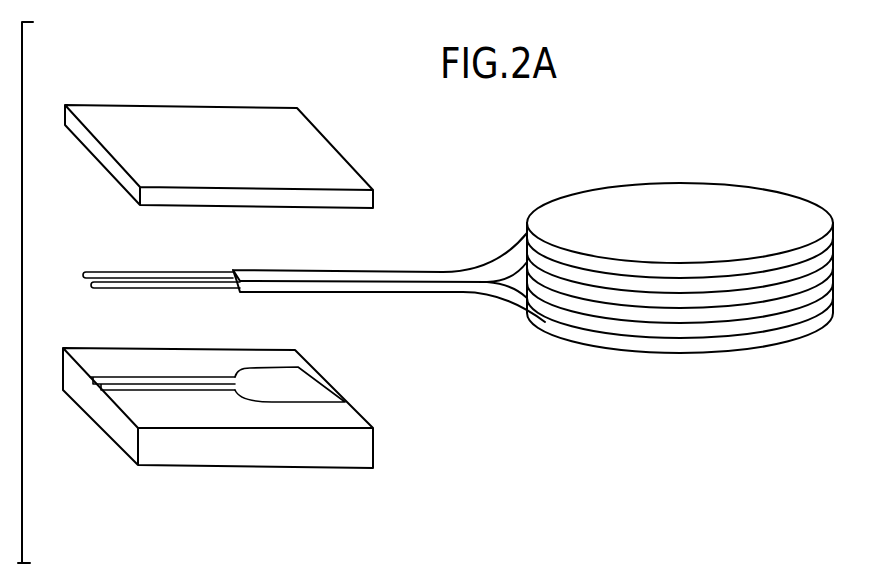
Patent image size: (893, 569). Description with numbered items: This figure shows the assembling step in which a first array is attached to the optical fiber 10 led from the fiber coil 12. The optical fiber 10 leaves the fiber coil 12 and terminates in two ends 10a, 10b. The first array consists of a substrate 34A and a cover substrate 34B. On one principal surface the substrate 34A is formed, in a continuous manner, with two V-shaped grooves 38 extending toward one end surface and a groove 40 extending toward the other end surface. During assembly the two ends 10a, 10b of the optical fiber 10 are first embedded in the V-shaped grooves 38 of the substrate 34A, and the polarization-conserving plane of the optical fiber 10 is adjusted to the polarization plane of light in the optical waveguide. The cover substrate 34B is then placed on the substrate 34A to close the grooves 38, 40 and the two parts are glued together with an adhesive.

The optical fiber 10 is at (410, 288).
The end of the optical fiber 10a is at (102, 270).
The end of the optical fiber 10b is at (130, 287).
The fiber coil 12 is at (670, 193).
The substrate 34A is at (272, 448).
The cover substrate 34B is at (308, 143).
The V-shaped grooves 38 is at (105, 392).
The groove 40 is at (317, 390).